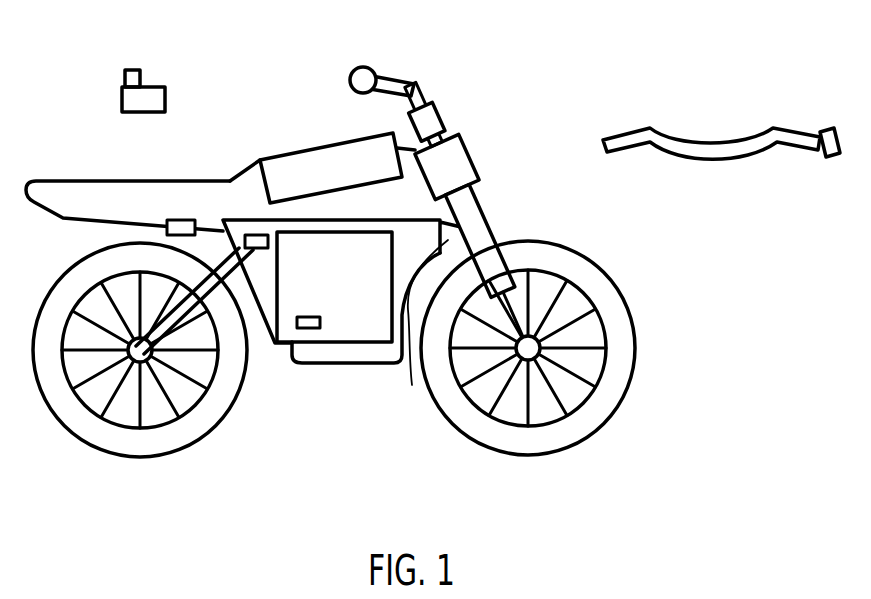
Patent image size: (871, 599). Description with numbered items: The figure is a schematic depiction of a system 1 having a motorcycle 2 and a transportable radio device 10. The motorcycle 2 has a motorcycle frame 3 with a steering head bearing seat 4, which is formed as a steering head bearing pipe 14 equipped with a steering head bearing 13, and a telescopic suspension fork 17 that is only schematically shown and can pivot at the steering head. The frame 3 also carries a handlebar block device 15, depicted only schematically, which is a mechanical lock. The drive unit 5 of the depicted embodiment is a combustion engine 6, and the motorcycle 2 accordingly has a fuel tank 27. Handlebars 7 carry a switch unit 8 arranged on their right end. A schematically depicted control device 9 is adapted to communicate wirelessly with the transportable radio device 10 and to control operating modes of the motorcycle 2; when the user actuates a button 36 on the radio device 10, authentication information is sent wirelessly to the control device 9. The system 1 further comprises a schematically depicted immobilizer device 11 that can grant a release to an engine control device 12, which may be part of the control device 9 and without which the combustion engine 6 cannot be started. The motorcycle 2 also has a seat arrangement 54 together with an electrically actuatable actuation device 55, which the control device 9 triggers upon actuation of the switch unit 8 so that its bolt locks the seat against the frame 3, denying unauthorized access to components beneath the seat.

The system 1 is at (212, 481).
The motorcycle 2 is at (88, 457).
The motorcycle frame 3 is at (259, 160).
The steering head bearing seat 4 is at (467, 135).
The drive unit 5 is at (337, 343).
The combustion engine 6 is at (371, 364).
The handlebars 7 is at (401, 77).
The switch unit 8 is at (363, 67).
The control device 9 is at (250, 249).
The transportable radio device 10 is at (158, 86).
The immobilizer device 11 is at (302, 330).
The engine control device 12 is at (255, 234).
The steering head bearing 13 is at (490, 147).
The steering head bearing pipe 14 is at (479, 170).
The handlebar block device 15 is at (441, 117).
The telescopic suspension fork 17 is at (412, 385).
The fuel tank 27 is at (300, 155).
The button 36 is at (124, 79).
The seat arrangement 54 is at (72, 181).
The electrically actuatable actuation device 55 is at (182, 220).